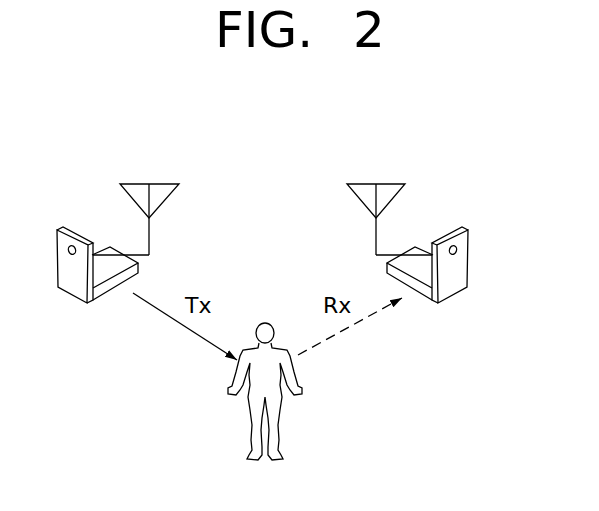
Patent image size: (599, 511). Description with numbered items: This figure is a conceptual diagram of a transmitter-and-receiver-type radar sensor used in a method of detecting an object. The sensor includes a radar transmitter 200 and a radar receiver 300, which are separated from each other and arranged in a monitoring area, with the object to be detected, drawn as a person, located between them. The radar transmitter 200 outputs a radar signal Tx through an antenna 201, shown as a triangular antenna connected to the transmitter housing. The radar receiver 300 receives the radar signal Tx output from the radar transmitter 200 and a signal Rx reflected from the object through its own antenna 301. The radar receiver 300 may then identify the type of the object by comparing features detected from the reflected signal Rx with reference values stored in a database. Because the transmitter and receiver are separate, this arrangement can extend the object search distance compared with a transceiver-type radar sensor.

The radar transmitter 200 is at (67, 226).
The antenna 201 is at (163, 182).
The radar receiver 300 is at (458, 226).
The antenna 301 is at (363, 182).